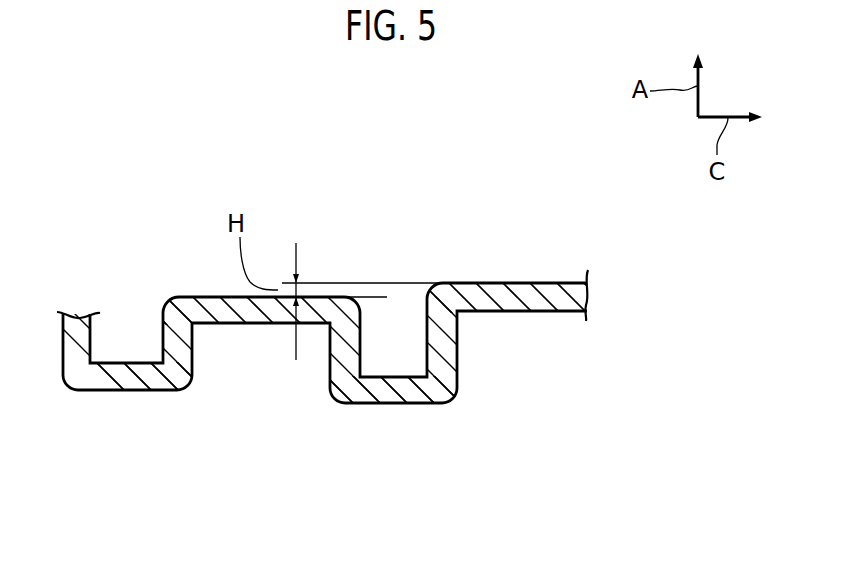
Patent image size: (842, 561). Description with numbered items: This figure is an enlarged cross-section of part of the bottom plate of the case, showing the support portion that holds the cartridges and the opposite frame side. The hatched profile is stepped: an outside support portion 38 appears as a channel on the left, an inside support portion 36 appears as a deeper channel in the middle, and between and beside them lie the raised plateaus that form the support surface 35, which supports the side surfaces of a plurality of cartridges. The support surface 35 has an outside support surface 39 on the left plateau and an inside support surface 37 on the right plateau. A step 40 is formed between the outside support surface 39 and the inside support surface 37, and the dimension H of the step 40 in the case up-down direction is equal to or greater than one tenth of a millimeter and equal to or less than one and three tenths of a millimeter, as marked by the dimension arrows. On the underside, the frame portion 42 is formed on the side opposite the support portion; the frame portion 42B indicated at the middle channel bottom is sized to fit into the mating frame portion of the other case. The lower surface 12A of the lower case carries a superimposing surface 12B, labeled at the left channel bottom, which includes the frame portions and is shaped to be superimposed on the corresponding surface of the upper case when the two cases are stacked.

The outside support portion 38 is at (163, 320).
The outside support surface 39 is at (212, 297).
The support surface 35 is at (360, 297).
The inside support surface 37 is at (532, 283).
The inside support portion 36 is at (421, 340).
The step 40 is at (377, 291).
The superimposing surface 12B is at (137, 390).
The lower surface 12A is at (360, 415).
The frame portion 42B is at (390, 403).
The frame portion 42 is at (360, 415).